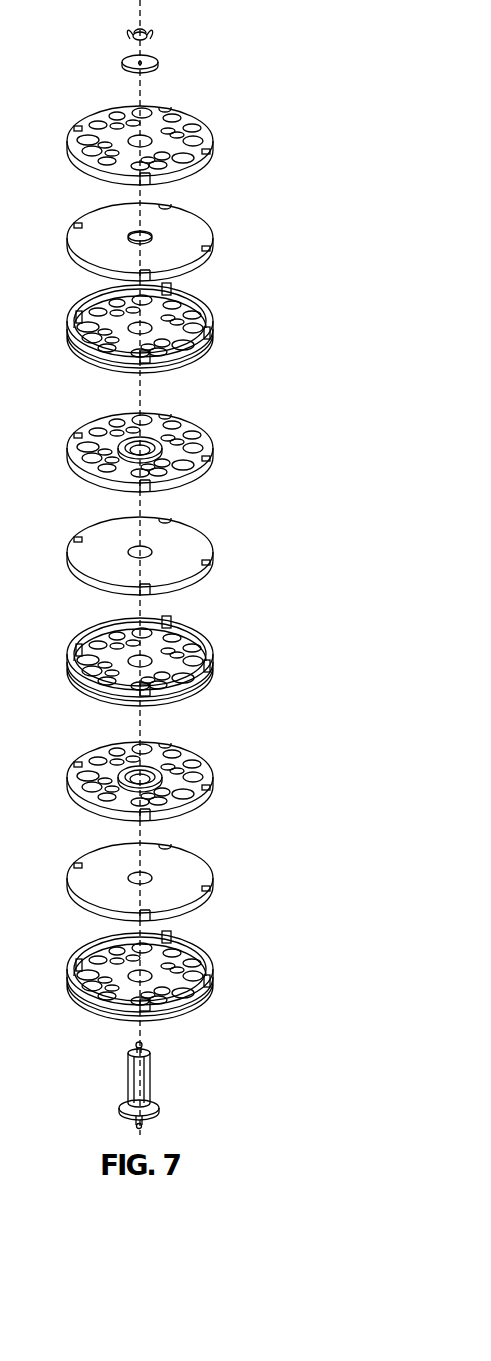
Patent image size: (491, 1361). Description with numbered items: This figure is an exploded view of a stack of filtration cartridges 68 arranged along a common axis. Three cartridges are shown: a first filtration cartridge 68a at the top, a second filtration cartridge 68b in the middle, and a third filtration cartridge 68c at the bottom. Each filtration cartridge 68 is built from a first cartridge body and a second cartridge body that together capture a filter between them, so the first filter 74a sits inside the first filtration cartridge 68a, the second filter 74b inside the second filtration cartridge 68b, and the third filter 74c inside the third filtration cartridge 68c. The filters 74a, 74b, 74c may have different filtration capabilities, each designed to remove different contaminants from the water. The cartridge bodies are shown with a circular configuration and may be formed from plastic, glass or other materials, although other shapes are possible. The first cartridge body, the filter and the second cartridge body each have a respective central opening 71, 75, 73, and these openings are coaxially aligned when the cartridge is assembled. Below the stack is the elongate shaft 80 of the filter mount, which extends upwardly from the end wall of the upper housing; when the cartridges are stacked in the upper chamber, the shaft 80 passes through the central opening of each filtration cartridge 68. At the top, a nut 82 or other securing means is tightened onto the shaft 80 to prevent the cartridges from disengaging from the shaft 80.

The filtration cartridge 68 is at (184, 557).
The first filtration cartridge 68a is at (240, 127).
The second filtration cartridge 68b is at (240, 433).
The third filtration cartridge 68c is at (240, 752).
The central opening 71 is at (133, 139).
The central opening 73 is at (150, 236).
The first filter 74a is at (97, 218).
The second filter 74b is at (95, 530).
The third filter 74c is at (97, 858).
The central opening 75 is at (144, 328).
The shaft 80 is at (150, 1070).
The nut 82 is at (150, 33).